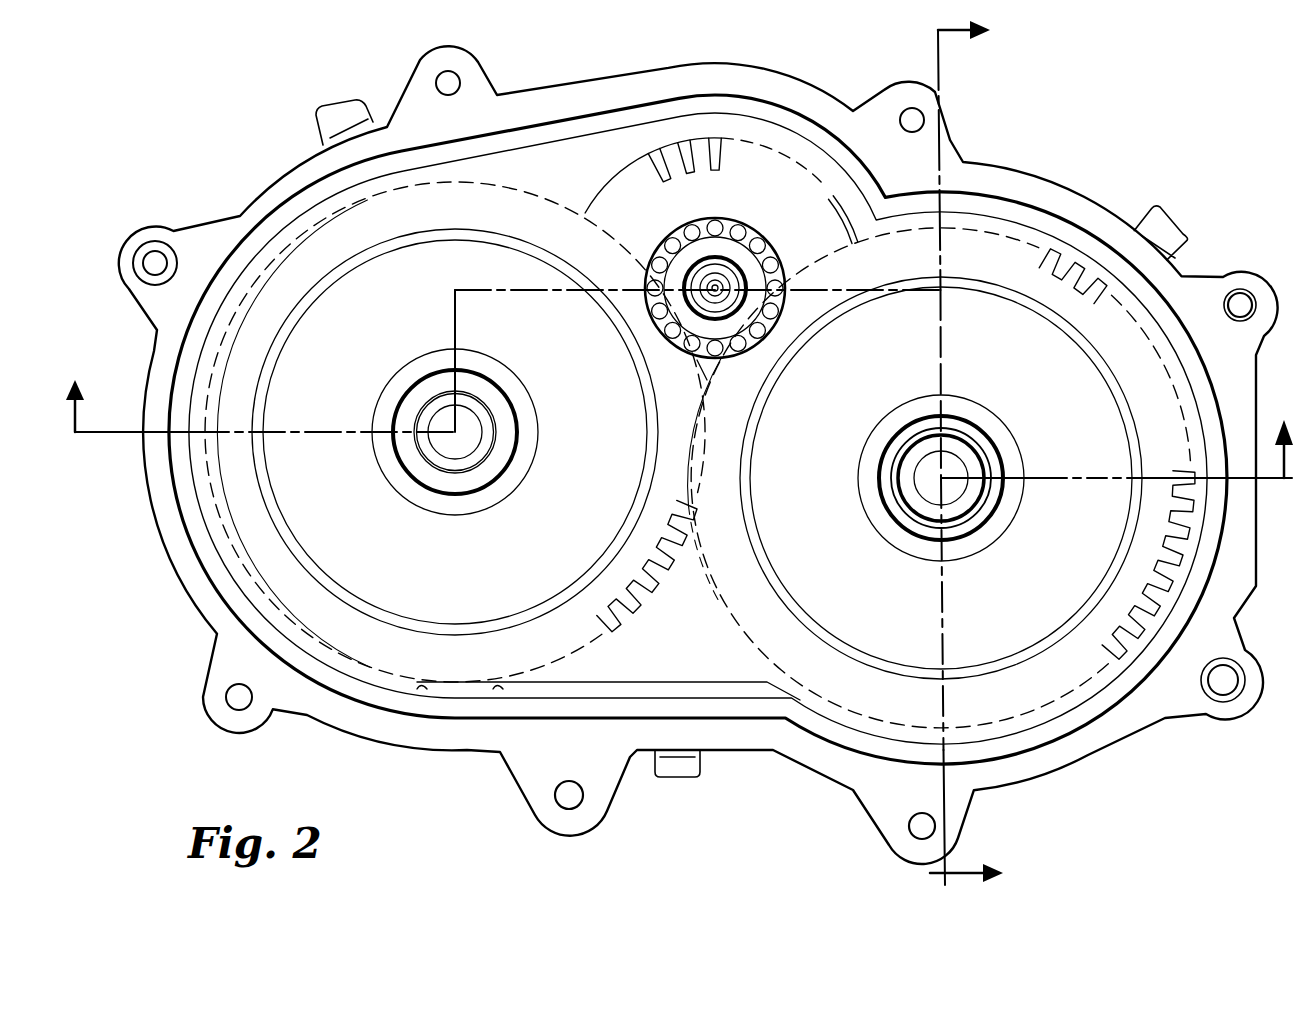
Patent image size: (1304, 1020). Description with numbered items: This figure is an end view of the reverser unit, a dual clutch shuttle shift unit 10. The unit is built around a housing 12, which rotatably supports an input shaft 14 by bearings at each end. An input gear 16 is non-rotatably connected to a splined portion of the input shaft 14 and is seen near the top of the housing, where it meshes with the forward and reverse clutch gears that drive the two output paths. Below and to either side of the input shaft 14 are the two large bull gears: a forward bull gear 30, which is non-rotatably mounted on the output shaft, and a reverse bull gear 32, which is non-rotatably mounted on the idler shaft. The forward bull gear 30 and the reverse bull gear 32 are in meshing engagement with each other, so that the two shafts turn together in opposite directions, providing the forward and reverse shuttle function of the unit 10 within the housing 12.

The dual clutch shuttle shift unit 10 is at (679, 455).
The housing 12 is at (1087, 195).
The input shaft 14 is at (696, 226).
The input gear 16 is at (620, 174).
The forward bull gear 30 is at (1107, 317).
The reverse bull gear 32 is at (300, 257).